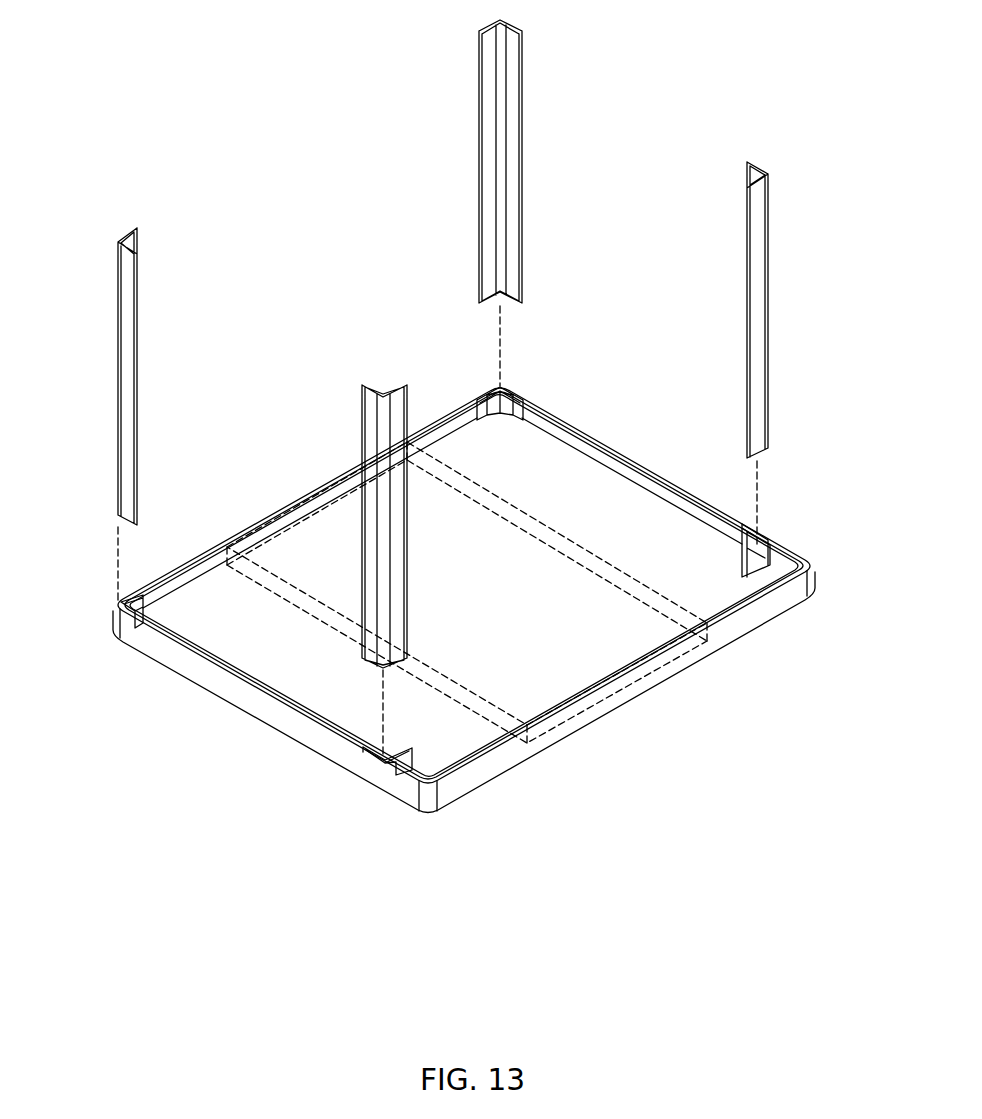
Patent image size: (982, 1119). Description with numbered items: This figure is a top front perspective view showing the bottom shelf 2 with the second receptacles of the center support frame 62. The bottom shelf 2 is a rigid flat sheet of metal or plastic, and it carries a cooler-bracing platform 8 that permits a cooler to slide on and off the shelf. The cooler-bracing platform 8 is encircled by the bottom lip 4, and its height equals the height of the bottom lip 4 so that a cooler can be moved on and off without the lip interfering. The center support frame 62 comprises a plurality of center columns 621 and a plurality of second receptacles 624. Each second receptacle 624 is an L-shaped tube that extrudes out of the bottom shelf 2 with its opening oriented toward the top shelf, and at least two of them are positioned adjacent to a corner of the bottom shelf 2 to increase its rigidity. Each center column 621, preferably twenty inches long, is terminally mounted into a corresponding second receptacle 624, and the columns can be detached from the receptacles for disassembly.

The bottom shelf 2 is at (467, 725).
The bottom lip 4 is at (650, 470).
The cooler-bracing platform 8 is at (513, 512).
The center support frame 62 is at (303, 290).
The center column 621 is at (117, 450).
The second receptacle 624 is at (140, 607).